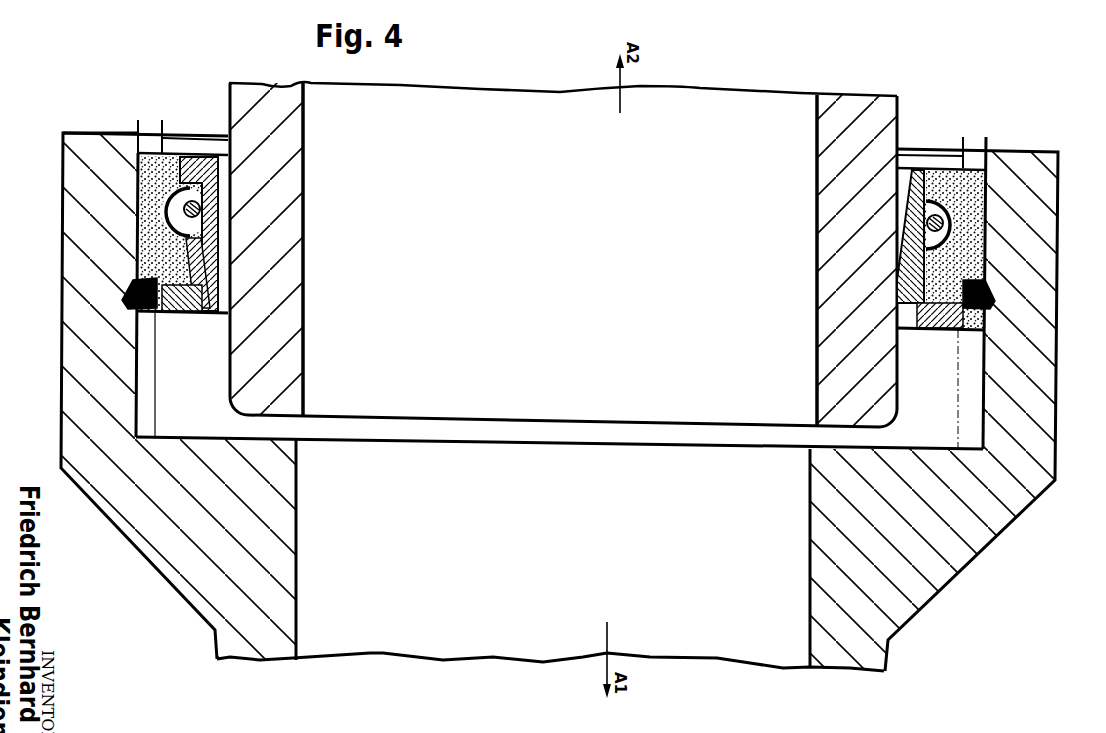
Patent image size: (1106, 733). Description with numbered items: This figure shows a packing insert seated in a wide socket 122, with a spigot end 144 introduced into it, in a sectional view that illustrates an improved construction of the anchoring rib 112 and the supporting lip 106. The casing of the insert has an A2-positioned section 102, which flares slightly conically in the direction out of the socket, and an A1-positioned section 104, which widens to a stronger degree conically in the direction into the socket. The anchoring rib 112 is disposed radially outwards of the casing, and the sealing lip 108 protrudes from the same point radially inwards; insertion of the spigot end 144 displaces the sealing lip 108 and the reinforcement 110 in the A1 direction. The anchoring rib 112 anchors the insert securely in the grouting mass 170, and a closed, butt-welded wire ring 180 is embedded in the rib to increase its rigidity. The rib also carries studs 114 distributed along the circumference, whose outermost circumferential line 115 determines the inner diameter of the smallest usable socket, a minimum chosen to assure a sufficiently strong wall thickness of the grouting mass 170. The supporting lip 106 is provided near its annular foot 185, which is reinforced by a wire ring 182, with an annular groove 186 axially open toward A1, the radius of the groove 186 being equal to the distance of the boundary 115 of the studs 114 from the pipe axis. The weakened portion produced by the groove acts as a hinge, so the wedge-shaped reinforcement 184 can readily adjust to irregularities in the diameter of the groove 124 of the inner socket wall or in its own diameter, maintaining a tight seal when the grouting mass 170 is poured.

The A2-positioned section 102 is at (214, 163).
The A1-positioned section 104 is at (204, 267).
The supporting lip 106 is at (140, 279).
The sealing lip 108 is at (212, 251).
The reinforcement 110 is at (190, 290).
The anchoring rib 112 is at (940, 170).
The studs 114 is at (185, 156).
The outermost circumferential line 115 is at (162, 132).
The wide socket 122 is at (287, 525).
The groove of the inner socket wall 124 is at (993, 307).
The spigot end 144 is at (283, 356).
The grouting mass 170 is at (1013, 151).
The closed wire ring 180 is at (213, 197).
The wire ring 182 is at (187, 310).
The wedge-shaped reinforcement 184 is at (133, 305).
The annular foot 185 is at (947, 331).
The annular groove 186 is at (160, 316).